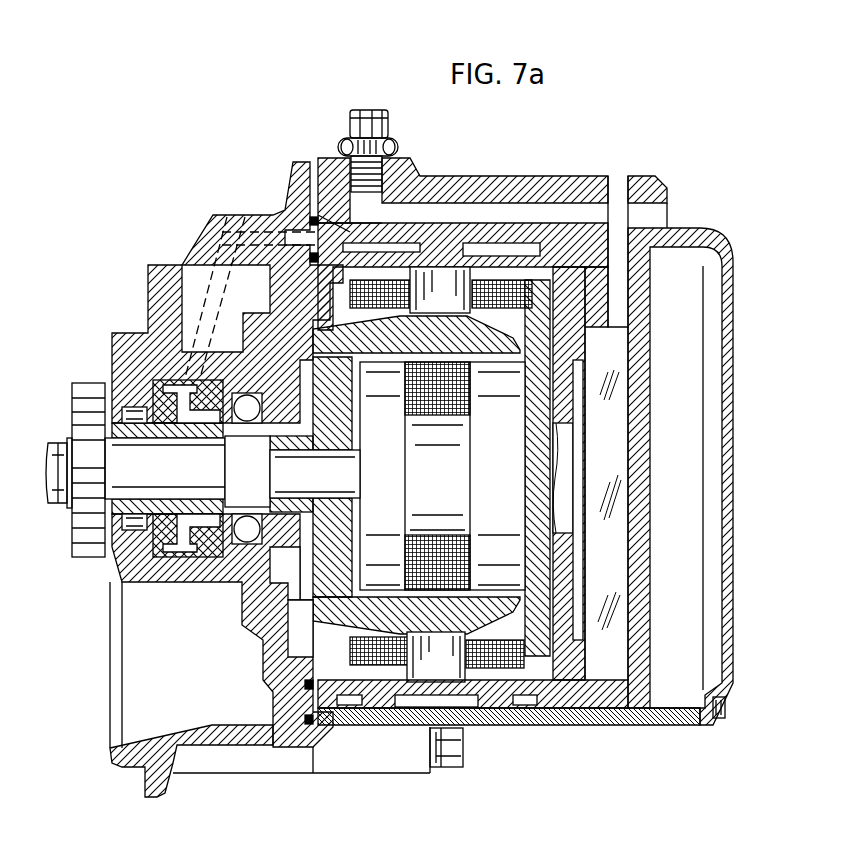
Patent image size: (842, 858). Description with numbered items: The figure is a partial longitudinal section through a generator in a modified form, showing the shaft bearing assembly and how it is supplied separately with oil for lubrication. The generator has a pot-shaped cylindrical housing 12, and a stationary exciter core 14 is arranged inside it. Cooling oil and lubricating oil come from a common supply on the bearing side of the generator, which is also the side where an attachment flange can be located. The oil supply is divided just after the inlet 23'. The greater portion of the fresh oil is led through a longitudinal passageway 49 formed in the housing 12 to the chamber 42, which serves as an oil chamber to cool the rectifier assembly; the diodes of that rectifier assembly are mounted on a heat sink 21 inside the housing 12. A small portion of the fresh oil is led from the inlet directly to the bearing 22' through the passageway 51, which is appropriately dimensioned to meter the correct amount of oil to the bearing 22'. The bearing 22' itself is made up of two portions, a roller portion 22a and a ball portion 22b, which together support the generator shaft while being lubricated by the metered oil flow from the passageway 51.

The housing 12 is at (557, 195).
The longitudinal passageway 49 is at (490, 215).
The chamber 42 is at (616, 340).
The heat sink 21 is at (610, 538).
The exciter core 14 is at (454, 472).
The bearing 22' is at (203, 470).
The roller portion 22a is at (131, 415).
The ball portion 22b is at (245, 420).
The passageway 51 is at (232, 241).
The inlet 23' is at (400, 166).